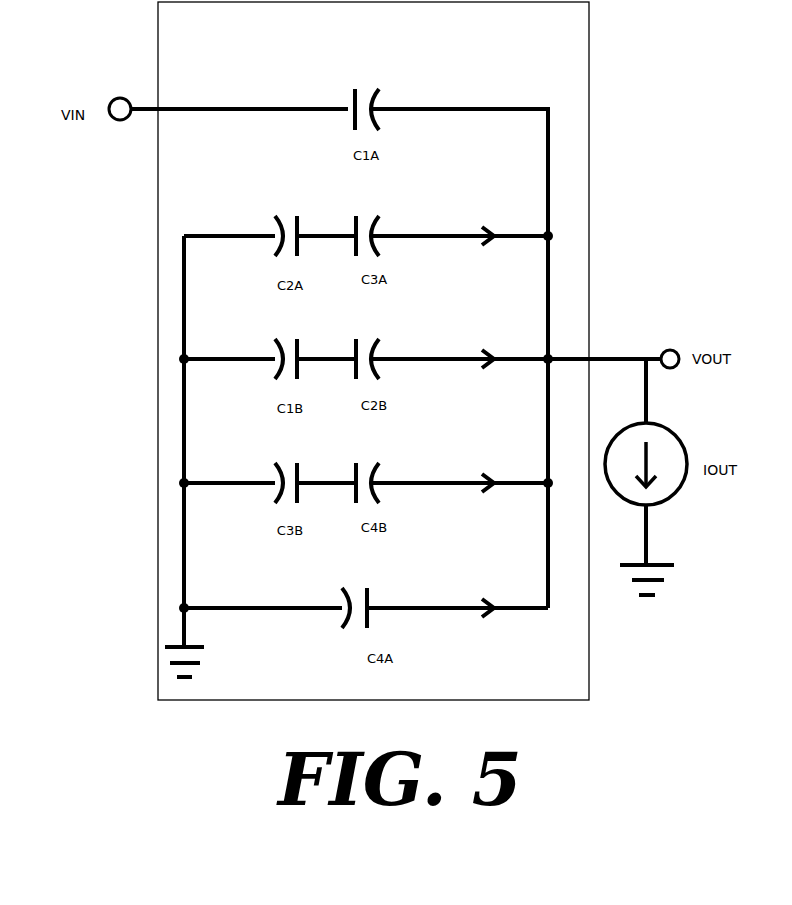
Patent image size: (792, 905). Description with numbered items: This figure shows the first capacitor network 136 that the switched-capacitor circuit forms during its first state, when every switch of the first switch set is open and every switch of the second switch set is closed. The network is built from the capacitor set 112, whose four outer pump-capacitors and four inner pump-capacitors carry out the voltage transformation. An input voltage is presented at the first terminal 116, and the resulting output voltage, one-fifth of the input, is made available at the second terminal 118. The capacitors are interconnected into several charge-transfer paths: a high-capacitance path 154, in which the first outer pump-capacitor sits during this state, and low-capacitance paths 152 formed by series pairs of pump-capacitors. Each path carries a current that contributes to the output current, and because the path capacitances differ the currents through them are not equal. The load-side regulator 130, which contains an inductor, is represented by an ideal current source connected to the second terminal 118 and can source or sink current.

The first capacitor network 136 is at (266, 37).
The first terminal 116 is at (107, 100).
The capacitor set 112 is at (407, 76).
The high-capacitance path 154 is at (477, 106).
The low-capacitance path 152 is at (248, 232).
The second terminal 118 is at (677, 347).
The regulator 130 is at (683, 427).